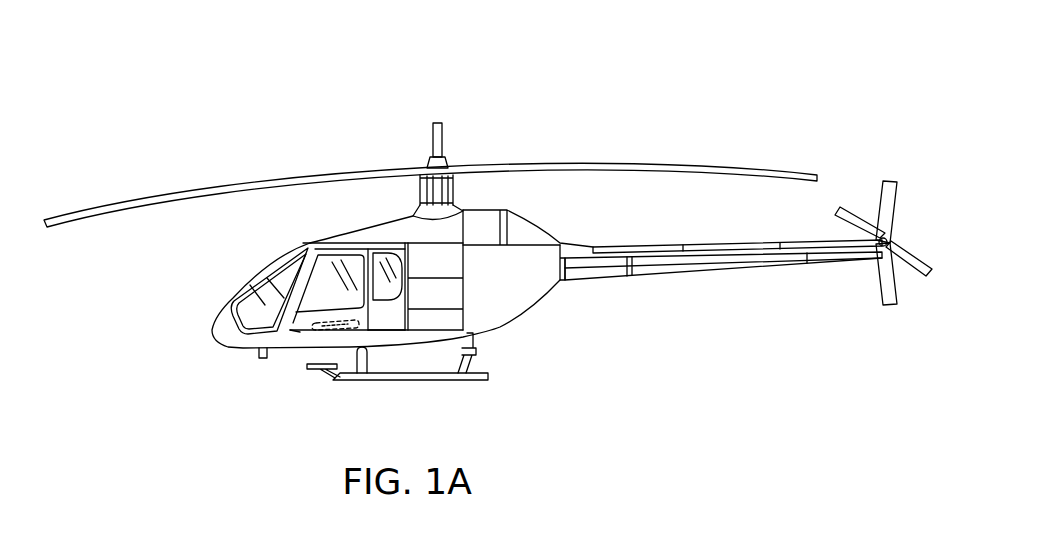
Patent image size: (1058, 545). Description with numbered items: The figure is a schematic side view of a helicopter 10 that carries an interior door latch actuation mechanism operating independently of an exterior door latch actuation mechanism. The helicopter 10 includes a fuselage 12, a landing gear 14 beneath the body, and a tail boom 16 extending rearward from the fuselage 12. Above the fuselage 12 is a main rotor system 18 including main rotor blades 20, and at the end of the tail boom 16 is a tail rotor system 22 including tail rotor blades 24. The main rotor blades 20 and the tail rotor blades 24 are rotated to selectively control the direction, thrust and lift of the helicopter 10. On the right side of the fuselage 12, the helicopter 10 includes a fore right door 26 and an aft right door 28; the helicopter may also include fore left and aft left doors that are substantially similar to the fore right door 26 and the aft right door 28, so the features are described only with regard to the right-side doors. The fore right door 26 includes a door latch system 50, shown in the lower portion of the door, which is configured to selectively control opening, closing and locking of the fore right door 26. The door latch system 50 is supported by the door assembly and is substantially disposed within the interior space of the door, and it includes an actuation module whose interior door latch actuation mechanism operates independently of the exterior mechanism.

The helicopter 10 is at (284, 74).
The fuselage 12 is at (503, 303).
The landing gear 14 is at (438, 383).
The tail boom 16 is at (763, 266).
The main rotor system 18 is at (422, 147).
The main rotor blades 20 is at (623, 165).
The tail rotor system 22 is at (891, 231).
The tail rotor blades 24 is at (922, 261).
The fore right door 26 is at (300, 332).
The aft right door 28 is at (388, 325).
The door latch system 50 is at (348, 342).